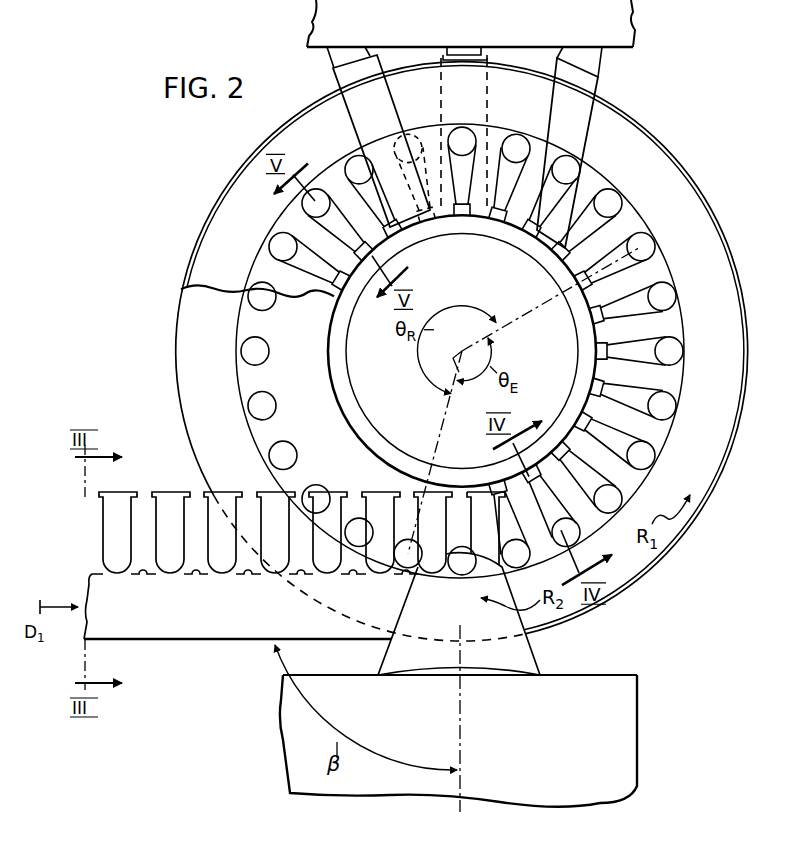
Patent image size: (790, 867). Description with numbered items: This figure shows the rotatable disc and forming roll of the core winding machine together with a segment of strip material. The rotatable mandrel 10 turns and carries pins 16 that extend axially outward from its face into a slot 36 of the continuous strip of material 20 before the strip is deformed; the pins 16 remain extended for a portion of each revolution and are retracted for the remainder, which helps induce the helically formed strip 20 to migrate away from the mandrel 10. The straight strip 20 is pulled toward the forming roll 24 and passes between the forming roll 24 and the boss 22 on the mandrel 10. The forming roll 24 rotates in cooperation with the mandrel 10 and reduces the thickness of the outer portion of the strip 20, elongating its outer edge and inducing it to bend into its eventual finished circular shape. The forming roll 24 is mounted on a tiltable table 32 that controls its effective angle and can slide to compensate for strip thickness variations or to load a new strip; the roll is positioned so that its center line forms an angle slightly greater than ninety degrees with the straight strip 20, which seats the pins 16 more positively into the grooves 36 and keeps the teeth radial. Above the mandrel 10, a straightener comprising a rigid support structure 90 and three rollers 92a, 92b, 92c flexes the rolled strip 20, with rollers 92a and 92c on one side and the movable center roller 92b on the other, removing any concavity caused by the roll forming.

The mandrel 10 is at (206, 459).
The pins 16 is at (266, 298).
The strip of material 20 is at (294, 582).
The boss 22 is at (190, 378).
The forming roll 24 is at (405, 608).
The tiltable table 32 is at (600, 676).
The slot 36 is at (198, 575).
The rigid support structure 90 is at (313, 20).
The roller 92a is at (355, 126).
The center roller 92b is at (451, 96).
The roller 92c is at (580, 111).